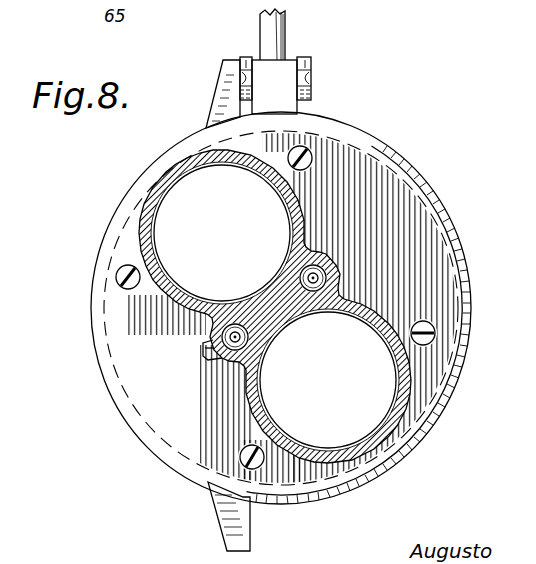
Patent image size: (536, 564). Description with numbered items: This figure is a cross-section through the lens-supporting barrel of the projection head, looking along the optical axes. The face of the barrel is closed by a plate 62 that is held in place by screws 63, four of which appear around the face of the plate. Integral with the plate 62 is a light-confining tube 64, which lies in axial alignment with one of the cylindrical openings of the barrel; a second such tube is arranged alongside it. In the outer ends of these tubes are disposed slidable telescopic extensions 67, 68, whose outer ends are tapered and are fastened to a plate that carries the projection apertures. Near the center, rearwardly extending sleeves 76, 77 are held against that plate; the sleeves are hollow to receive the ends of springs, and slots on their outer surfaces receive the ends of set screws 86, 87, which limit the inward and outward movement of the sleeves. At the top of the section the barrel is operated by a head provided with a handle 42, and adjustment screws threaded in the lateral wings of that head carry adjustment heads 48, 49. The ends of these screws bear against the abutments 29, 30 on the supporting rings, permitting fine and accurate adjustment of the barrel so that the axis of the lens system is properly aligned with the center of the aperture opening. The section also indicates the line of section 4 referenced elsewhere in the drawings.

The section line / nut 4 is at (310, 76).
The abutment 29 is at (222, 86).
The upper abutment 30 is at (228, 526).
The handle 42 is at (285, 25).
The adjustment head 48 is at (246, 56).
The adjustment head 49 is at (312, 56).
The plate 62 is at (360, 192).
The screws 63 is at (312, 153).
The light-confining tube 64 is at (147, 200).
The telescopic extension 67 is at (190, 177).
The telescopic extension 68 is at (368, 430).
The sleeve 76 is at (212, 327).
The sleeve 77 is at (318, 316).
The set screw 86 is at (315, 266).
The set screw 87 is at (258, 369).